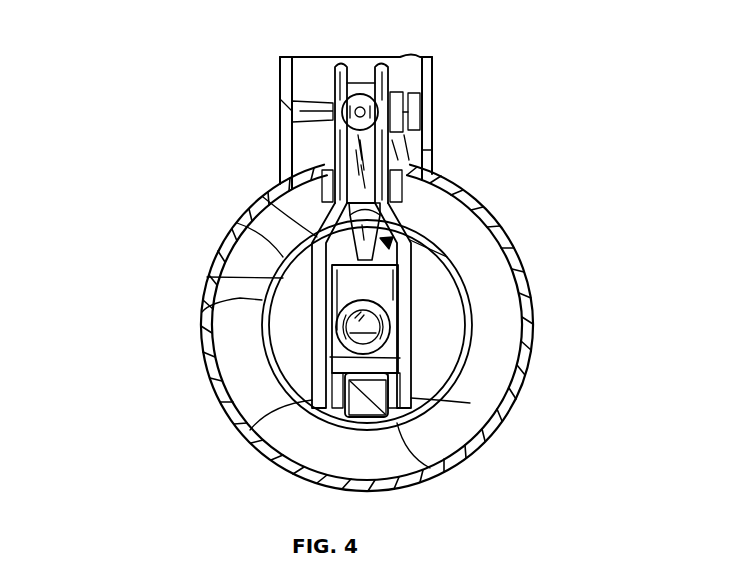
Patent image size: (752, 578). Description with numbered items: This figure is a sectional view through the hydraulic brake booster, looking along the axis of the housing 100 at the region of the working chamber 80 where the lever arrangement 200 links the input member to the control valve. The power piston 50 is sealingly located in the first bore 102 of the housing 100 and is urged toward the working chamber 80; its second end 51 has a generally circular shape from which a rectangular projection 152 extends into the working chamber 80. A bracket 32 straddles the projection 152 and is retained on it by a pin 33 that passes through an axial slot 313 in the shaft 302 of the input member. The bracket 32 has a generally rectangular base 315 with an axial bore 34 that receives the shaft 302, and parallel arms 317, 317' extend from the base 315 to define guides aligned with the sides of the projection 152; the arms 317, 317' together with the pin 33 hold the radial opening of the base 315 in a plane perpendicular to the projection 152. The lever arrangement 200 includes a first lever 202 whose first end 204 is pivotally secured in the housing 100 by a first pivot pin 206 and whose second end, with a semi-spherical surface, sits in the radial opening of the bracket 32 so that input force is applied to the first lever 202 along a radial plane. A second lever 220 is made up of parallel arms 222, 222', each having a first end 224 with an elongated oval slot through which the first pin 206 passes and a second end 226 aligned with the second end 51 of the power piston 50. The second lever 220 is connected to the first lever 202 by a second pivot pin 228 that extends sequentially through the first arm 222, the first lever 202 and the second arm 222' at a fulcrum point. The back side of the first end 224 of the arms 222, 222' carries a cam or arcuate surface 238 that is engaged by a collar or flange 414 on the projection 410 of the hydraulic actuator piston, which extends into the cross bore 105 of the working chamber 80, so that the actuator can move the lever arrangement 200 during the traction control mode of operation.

The projection 410 is at (358, 110).
The first lever 202 is at (350, 68).
The first end 204 is at (370, 90).
The second lever 220 is at (404, 60).
The first end 224 is at (394, 73).
The first pivot pin 206 is at (400, 103).
The collar or flange 414 is at (416, 112).
The lever arrangement 200 is at (400, 150).
The cross bore 105 is at (432, 157).
The second pivot pin 228 is at (404, 176).
The cam or arcuate surface 238 is at (292, 111).
The bracket 32 is at (383, 240).
The first arm 222 is at (493, 235).
The second arm 222' is at (266, 201).
The housing 100 is at (508, 248).
The working chamber 80 is at (495, 277).
The base 315 is at (395, 282).
The axial bore 34 is at (392, 325).
The axial slot 313 is at (383, 333).
The shaft 302 is at (400, 358).
The first arm 317 is at (495, 405).
The second arm 317' is at (251, 433).
The second end 226 is at (400, 412).
The rectangular projection 152 is at (430, 468).
The pin 33 is at (336, 327).
The power piston 50 is at (202, 312).
The second end 51 is at (207, 277).
The first bore 102 is at (237, 223).